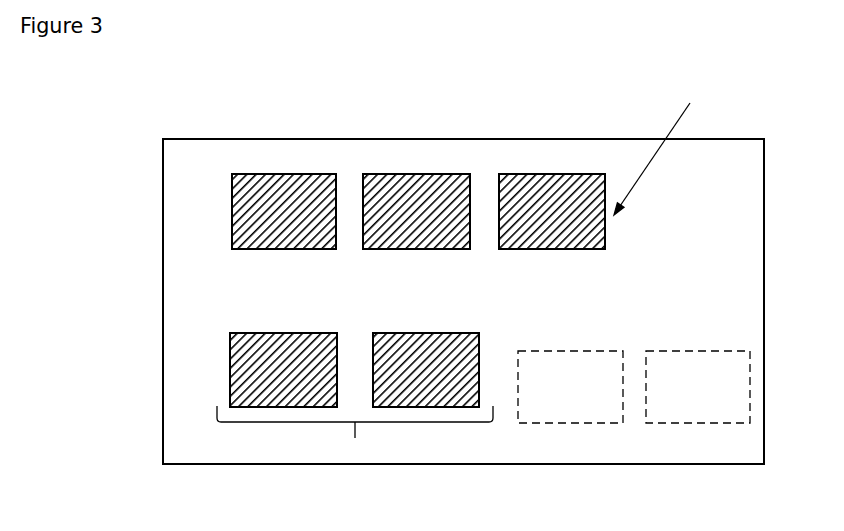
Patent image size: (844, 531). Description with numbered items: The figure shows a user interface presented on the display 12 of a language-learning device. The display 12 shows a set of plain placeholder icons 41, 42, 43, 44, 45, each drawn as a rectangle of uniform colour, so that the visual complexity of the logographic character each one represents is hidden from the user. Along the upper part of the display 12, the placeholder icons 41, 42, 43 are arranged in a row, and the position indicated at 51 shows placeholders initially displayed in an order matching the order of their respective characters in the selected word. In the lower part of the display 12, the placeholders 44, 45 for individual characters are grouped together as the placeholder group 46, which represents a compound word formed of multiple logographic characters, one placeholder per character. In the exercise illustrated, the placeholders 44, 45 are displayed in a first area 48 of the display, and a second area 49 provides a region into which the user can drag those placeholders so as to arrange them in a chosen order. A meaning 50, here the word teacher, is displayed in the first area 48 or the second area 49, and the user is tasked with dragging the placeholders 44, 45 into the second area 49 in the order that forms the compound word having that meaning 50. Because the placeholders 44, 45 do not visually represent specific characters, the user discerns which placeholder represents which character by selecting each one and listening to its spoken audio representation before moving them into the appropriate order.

The display 12 is at (163, 190).
The placeholder icon 41 is at (281, 173).
The placeholder icon 42 is at (405, 173).
The placeholder icon 43 is at (536, 173).
The placeholder 44 is at (227, 367).
The placeholder 45 is at (405, 407).
The placeholder group 46 is at (350, 436).
The first area 48 is at (653, 332).
The second area 49 is at (642, 430).
The meaning 50 is at (660, 288).
The placeholders in matching order 51 is at (654, 138).